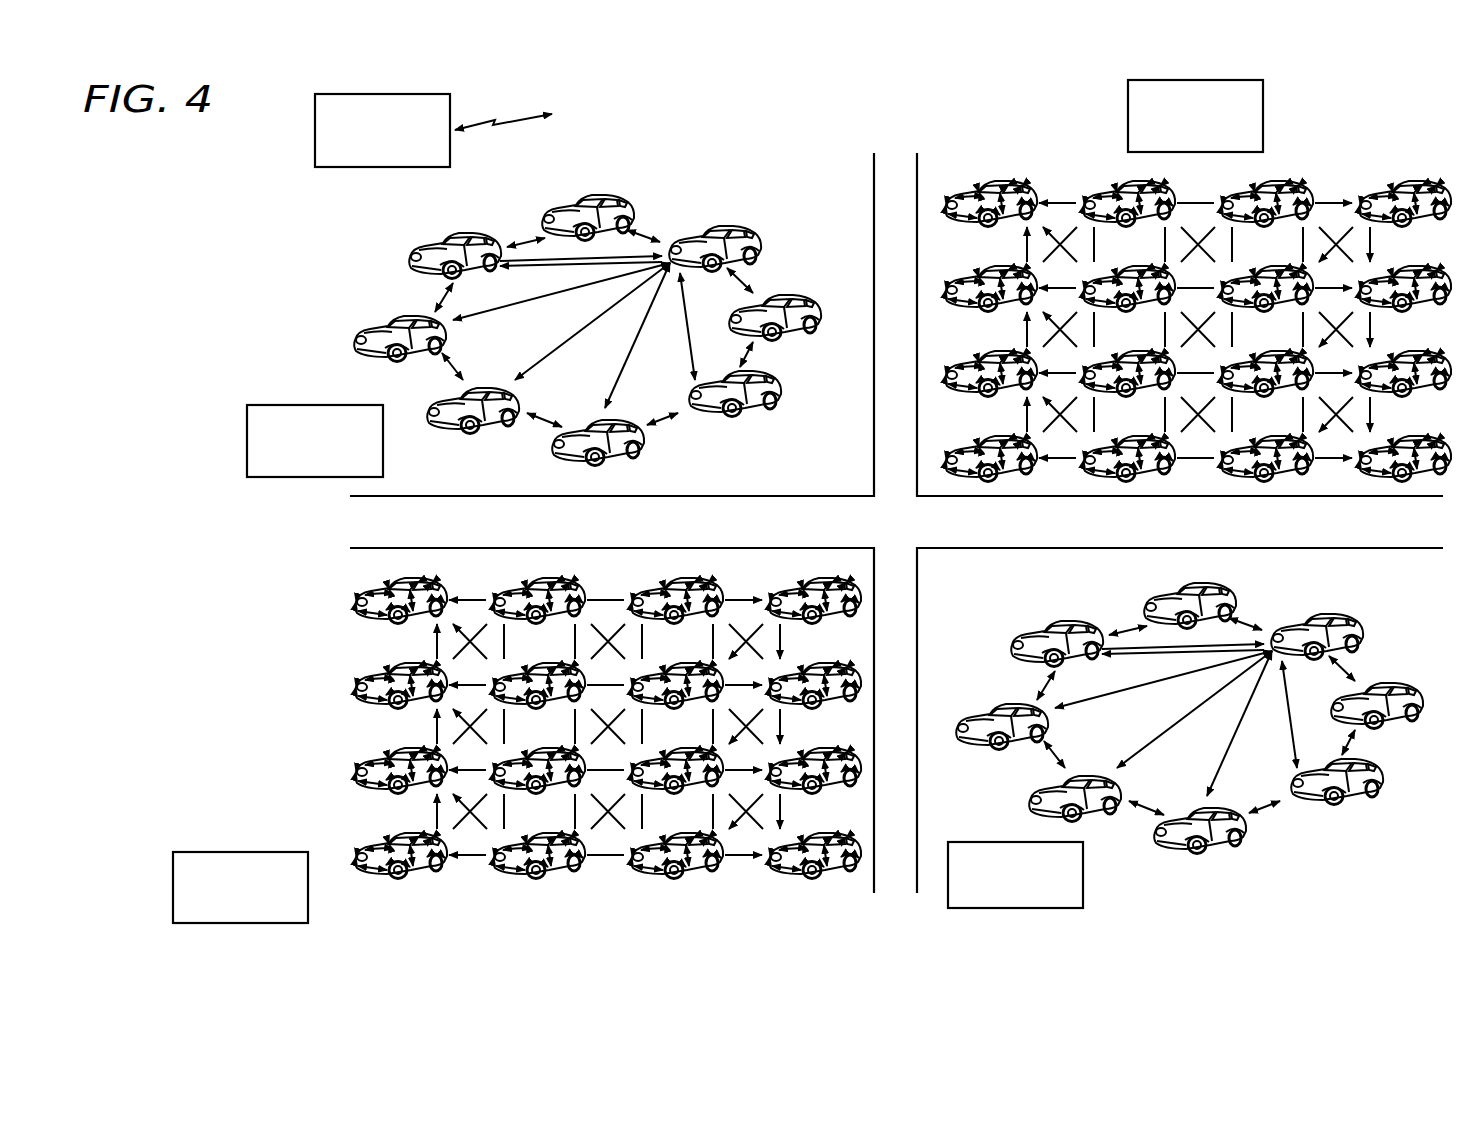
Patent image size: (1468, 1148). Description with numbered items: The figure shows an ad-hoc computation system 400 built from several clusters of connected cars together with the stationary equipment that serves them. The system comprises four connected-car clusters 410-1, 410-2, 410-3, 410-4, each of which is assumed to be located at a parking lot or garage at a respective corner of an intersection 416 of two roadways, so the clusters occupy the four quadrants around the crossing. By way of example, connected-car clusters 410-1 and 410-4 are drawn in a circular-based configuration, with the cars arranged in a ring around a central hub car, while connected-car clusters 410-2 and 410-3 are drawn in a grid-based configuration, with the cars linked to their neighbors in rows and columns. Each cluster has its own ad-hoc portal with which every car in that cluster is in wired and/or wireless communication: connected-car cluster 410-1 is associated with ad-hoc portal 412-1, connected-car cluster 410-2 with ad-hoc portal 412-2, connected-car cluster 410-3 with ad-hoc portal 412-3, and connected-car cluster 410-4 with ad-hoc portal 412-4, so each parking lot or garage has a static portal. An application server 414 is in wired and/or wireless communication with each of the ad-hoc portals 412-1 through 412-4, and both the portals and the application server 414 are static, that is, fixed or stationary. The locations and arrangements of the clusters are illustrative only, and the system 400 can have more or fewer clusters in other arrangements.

The ad-hoc computation system 400 is at (165, 163).
The connected-car cluster 410-1 is at (829, 182).
The connected-car cluster 410-2 is at (1036, 140).
The connected-car cluster 410-3 is at (735, 908).
The connected-car cluster 410-4 is at (1379, 874).
The ad-hoc portal 412-1 is at (320, 405).
The ad-hoc portal 412-2 is at (1263, 118).
The ad-hoc portal 412-3 is at (247, 852).
The ad-hoc portal 412-4 is at (1083, 878).
The application server 414 is at (315, 124).
The intersection 416 is at (912, 533).